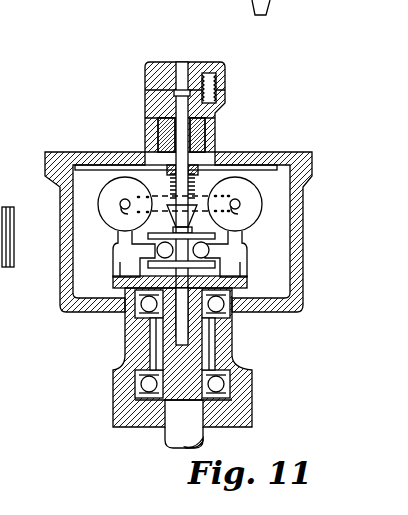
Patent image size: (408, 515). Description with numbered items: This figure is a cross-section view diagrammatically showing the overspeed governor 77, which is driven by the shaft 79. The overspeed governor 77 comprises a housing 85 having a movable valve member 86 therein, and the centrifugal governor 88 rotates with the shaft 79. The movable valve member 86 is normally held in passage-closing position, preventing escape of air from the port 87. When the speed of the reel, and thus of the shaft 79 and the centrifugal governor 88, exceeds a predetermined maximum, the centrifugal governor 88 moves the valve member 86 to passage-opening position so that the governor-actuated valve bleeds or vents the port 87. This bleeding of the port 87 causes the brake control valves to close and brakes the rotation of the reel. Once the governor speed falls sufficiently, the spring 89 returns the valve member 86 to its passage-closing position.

The overspeed governor 77 is at (302, 266).
The shaft 79 is at (173, 431).
The housing 85 is at (62, 265).
The movable valve member 86 is at (178, 138).
The port 87 is at (208, 90).
The centrifugal governor 88 is at (255, 206).
The spring 89 is at (227, 153).